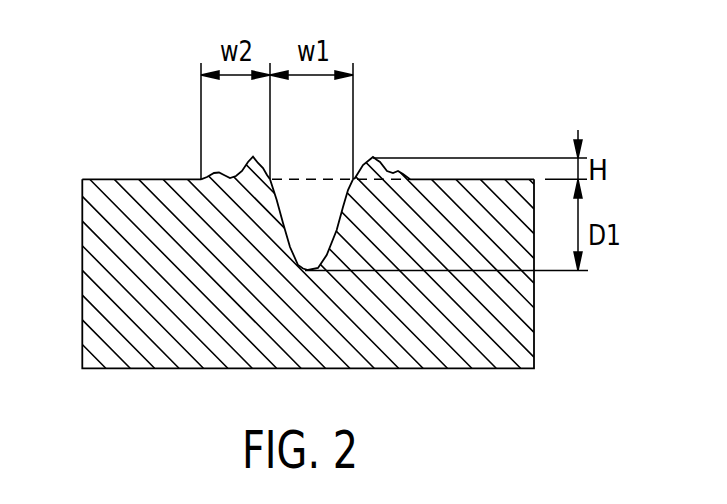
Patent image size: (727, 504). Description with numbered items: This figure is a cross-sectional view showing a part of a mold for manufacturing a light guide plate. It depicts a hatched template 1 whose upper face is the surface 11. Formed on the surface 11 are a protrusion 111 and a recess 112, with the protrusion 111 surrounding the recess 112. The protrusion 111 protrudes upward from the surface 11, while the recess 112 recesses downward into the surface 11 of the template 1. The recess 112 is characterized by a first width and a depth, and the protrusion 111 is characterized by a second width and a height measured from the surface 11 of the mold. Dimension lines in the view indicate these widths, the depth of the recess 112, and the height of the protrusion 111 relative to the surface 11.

The template 1 is at (535, 305).
The surface 11 is at (463, 179).
The protrusion 111 is at (373, 157).
The recess 112 is at (308, 207).